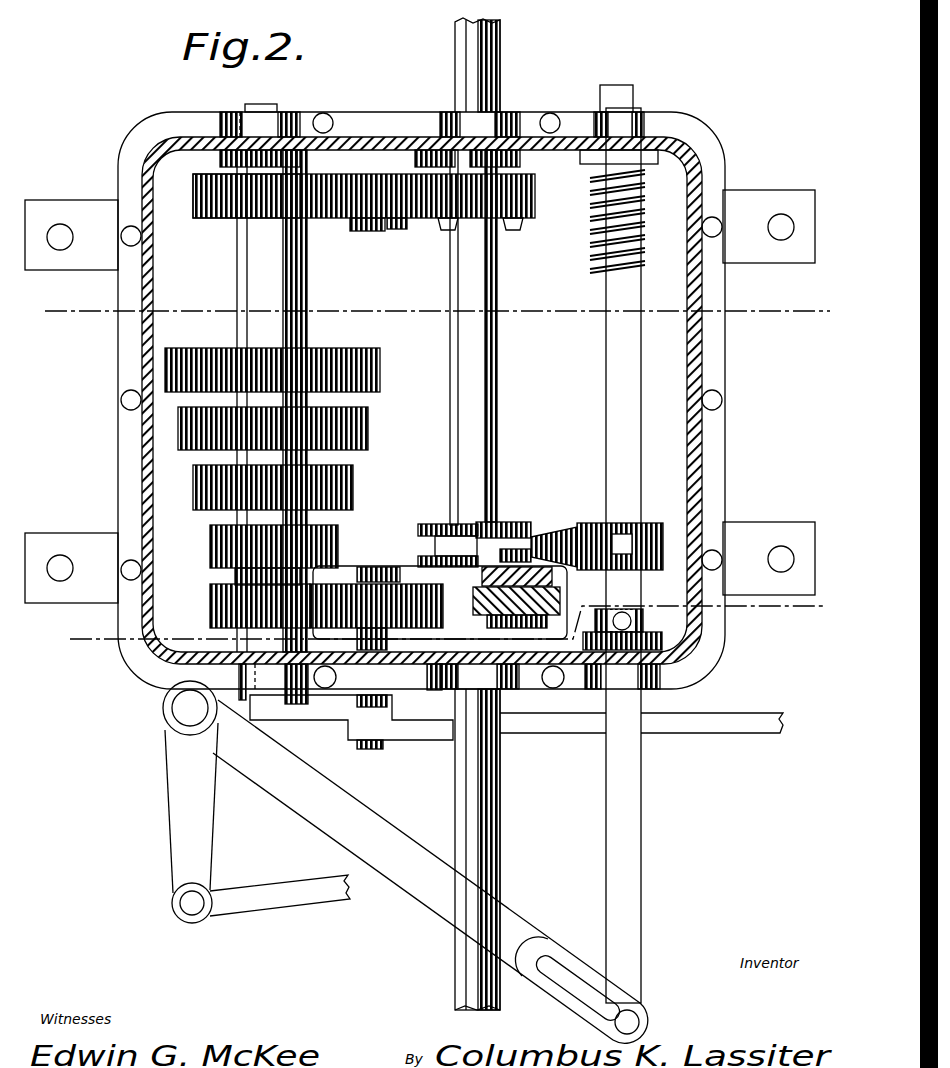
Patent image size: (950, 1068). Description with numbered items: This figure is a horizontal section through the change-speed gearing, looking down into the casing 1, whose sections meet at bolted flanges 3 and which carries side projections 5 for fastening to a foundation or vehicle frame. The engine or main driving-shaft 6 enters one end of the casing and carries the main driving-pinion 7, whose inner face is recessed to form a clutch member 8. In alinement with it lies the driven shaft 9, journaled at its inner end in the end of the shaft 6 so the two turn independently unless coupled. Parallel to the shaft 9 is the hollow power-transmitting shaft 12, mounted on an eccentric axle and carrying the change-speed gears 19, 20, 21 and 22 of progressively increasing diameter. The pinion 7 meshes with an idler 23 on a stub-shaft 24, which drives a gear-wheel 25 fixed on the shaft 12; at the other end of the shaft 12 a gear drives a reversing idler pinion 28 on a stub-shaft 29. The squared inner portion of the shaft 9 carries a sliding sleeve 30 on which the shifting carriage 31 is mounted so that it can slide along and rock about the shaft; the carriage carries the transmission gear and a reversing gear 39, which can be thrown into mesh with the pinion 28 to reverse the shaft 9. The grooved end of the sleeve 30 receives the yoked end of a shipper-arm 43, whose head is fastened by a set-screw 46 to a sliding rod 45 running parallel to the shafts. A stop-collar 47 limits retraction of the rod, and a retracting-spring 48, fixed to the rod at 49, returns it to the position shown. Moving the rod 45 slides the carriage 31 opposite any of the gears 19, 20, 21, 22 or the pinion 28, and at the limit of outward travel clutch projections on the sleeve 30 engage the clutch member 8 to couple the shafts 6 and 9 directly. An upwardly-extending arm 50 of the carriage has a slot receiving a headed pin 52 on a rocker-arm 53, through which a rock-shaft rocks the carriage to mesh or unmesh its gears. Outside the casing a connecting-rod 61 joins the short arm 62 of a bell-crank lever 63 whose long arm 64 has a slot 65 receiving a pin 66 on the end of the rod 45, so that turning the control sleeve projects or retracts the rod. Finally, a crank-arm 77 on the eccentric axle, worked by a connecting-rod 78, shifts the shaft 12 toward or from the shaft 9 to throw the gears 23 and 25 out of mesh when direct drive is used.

The casing 1 is at (765, 619).
The flange 3 is at (60, 355).
The projection 5 is at (68, 202).
The main driving-shaft 6 is at (455, 62).
The main driving-pinion 7 is at (535, 195).
The clutch member 8 is at (522, 224).
The driven shaft 9 is at (497, 382).
The hollow power-transmitting shaft 12 is at (237, 288).
The change-speed gear 19 is at (338, 548).
The change-speed gear 20 is at (353, 490).
The change-speed gear 21 is at (368, 430).
The change-speed gear 22 is at (380, 356).
The idler 23 is at (397, 230).
The stub-shaft 24 is at (365, 231).
The gear-wheel 25 is at (230, 220).
The reversing idler pinion 28 is at (210, 600).
The stub-shaft 29 is at (245, 578).
The sleeve 30 is at (500, 522).
The shifting carriage 31 is at (390, 565).
The reversing gear 39 is at (365, 630).
The shipper-arm 43 is at (560, 527).
The sliding rod 45 is at (606, 335).
The set-screw 46 is at (628, 533).
The stop-collar 47 is at (645, 608).
The retracting-spring 48 is at (640, 177).
The spring attachment point 49 is at (588, 268).
The upwardly-extending arm 50 is at (572, 682).
The headed pin 52 is at (433, 691).
The rocker-arm 53 is at (556, 578).
The connecting-rod 61 is at (270, 880).
The short arm 62 is at (180, 784).
The bell-crank lever 63 is at (162, 708).
The long arm 64 is at (372, 822).
The slot 65 is at (550, 948).
The pin 66 is at (640, 1015).
The crank-arm 77 is at (315, 724).
The connecting-rod 78 is at (722, 709).